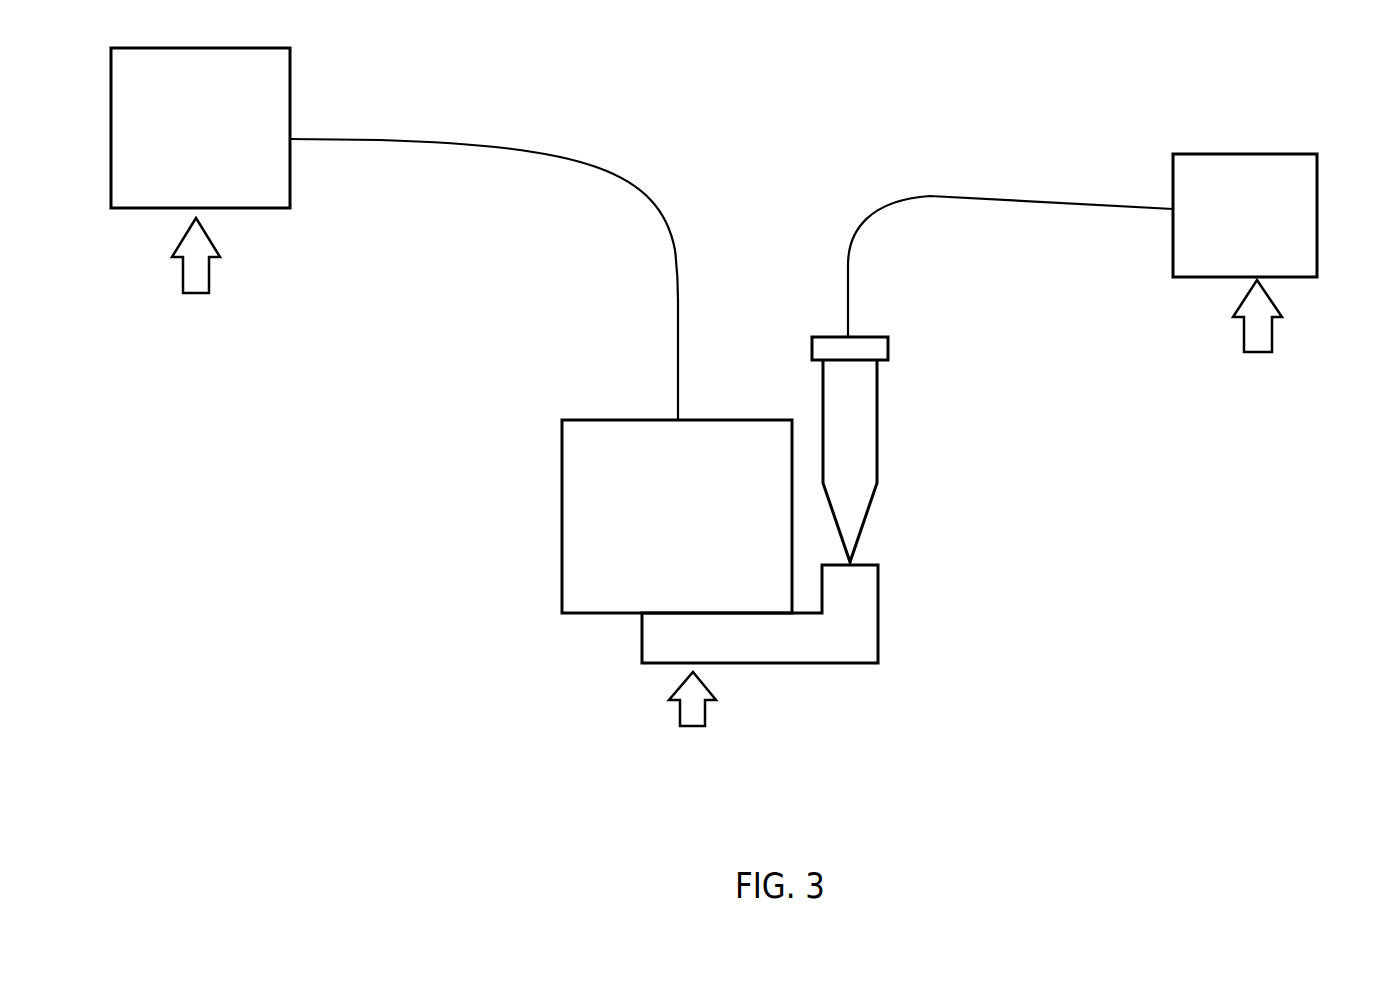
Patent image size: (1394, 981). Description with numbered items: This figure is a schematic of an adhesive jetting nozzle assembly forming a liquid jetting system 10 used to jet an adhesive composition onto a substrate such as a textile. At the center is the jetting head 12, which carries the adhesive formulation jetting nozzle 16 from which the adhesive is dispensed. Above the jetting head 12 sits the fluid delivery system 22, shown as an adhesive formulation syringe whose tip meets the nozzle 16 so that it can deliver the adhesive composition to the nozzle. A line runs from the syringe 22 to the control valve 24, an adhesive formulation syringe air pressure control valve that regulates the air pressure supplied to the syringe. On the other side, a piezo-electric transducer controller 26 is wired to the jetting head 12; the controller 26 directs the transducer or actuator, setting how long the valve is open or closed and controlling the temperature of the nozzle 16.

The liquid jetting system 10 is at (376, 661).
The jetting head 12 is at (942, 640).
The nozzle 16 is at (693, 726).
The fluid delivery system 22 is at (888, 347).
The control valve 24 is at (1258, 352).
The controller 26 is at (197, 293).